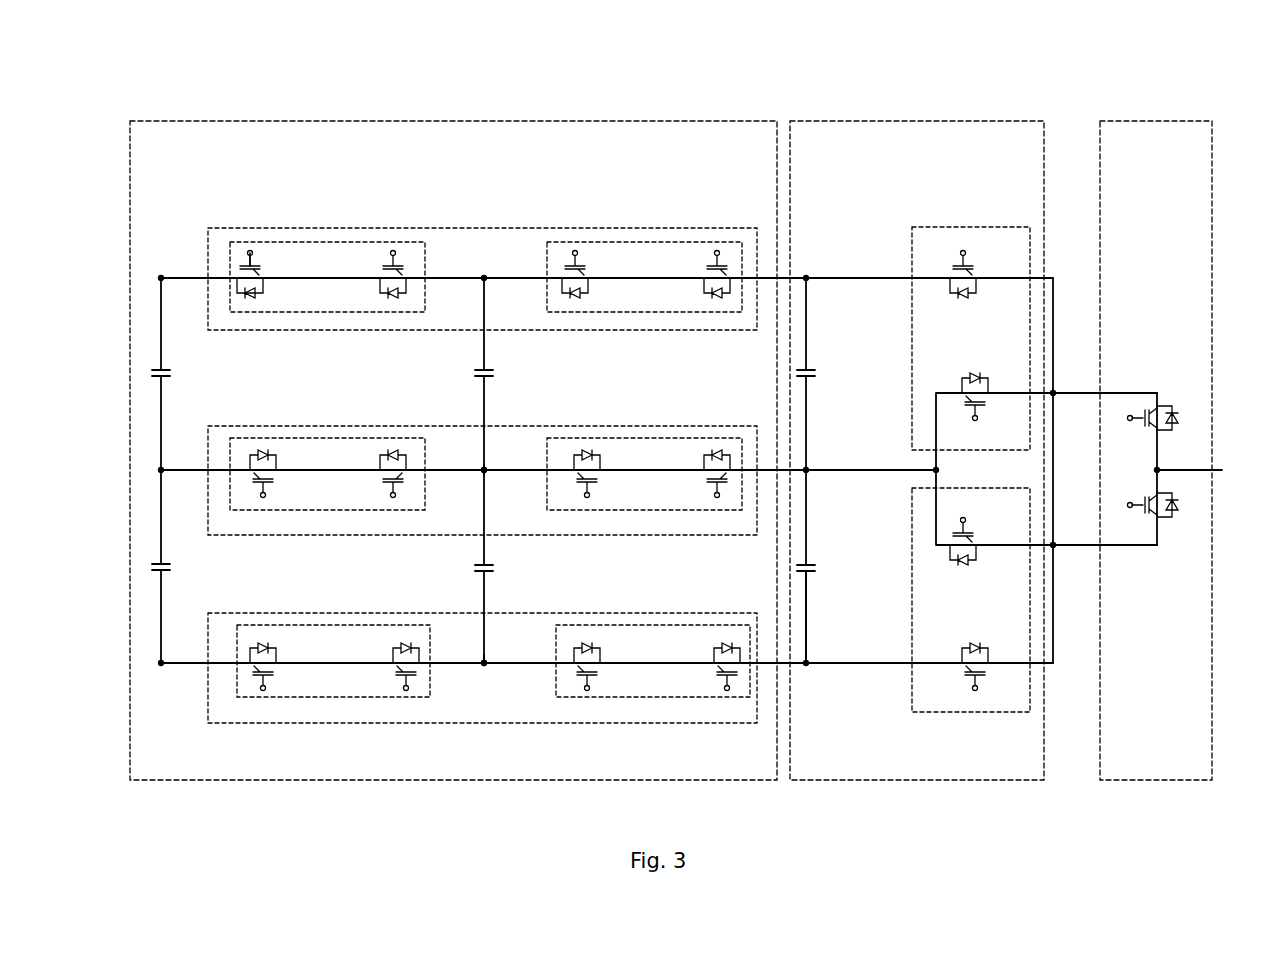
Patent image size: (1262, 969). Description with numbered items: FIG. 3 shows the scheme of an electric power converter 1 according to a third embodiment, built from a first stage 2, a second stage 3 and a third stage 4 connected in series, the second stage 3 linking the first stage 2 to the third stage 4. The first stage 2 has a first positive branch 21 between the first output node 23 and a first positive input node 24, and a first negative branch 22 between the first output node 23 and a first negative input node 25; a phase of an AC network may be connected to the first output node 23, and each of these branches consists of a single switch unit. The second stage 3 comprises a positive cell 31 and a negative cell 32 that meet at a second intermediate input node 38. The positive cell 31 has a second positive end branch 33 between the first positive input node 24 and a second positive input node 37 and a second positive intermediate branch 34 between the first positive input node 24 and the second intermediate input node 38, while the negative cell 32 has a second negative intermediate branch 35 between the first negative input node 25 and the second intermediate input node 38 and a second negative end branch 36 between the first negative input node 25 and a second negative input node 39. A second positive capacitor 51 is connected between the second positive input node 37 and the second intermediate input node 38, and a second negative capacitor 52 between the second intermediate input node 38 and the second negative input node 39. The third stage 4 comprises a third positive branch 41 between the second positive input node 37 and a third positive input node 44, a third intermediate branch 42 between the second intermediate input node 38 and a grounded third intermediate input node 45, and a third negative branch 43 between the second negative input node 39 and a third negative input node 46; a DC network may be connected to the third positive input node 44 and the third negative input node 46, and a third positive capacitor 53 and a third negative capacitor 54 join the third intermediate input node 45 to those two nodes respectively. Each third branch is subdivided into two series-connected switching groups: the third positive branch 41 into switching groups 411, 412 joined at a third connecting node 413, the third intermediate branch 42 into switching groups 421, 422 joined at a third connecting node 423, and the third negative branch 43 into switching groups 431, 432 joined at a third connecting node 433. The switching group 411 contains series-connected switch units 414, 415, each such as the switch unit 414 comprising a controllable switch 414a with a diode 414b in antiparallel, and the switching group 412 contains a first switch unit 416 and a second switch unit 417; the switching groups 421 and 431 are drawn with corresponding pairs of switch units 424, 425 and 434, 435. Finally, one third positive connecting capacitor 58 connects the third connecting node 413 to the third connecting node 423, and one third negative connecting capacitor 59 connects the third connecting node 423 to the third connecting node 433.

The electric power converter 1 is at (237, 95).
The first stage 2 is at (1162, 118).
The second stage 3 is at (902, 118).
The third stage 4 is at (453, 120).
The first positive branch 21 is at (1160, 393).
The first negative branch 22 is at (1175, 547).
The first output node 23 is at (1155, 470).
The first positive input node 24 is at (1053, 391).
The first negative input node 25 is at (1054, 548).
The positive cell 31 is at (992, 226).
The negative cell 32 is at (970, 713).
The second positive end branch 33 is at (963, 250).
The second positive intermediate branch 34 is at (983, 380).
The second negative intermediate branch 35 is at (978, 560).
The second negative end branch 36 is at (985, 690).
The second positive input node 37 is at (806, 276).
The second intermediate input node 38 is at (810, 470).
The second negative input node 39 is at (808, 665).
The third positive branch 41 is at (728, 228).
The third intermediate branch 42 is at (723, 426).
The third negative branch 43 is at (726, 613).
The third positive input node 44 is at (161, 274).
The third intermediate input node 45 is at (161, 470).
The third negative input node 46 is at (163, 668).
The second positive capacitor 51 is at (815, 375).
The second negative capacitor 52 is at (818, 578).
The third positive capacitor 53 is at (185, 380).
The third negative capacitor 54 is at (178, 568).
The third positive connecting capacitor 58 is at (470, 374).
The third negative connecting capacitor 59 is at (472, 569).
The switching group 411 is at (410, 240).
The additional third positive switching group 412 is at (572, 240).
The third connecting node 413 is at (487, 276).
The switch unit 414 is at (259, 260).
The controllable switch 414a is at (246, 262).
The diode 414b is at (248, 295).
The switch unit 415 is at (388, 259).
The first switch unit 416 is at (588, 259).
The second switch unit 417 is at (705, 259).
The switching group 421 is at (428, 494).
The additional third intermediate switching group 422 is at (645, 436).
The third connecting node 423 is at (487, 468).
The switch 424 is at (266, 447).
The switch 425 is at (390, 447).
The switching group 431 is at (333, 698).
The additional third negative switching group 432 is at (650, 698).
The third connecting node 433 is at (487, 660).
The switch 434 is at (402, 639).
The switch 435 is at (266, 639).